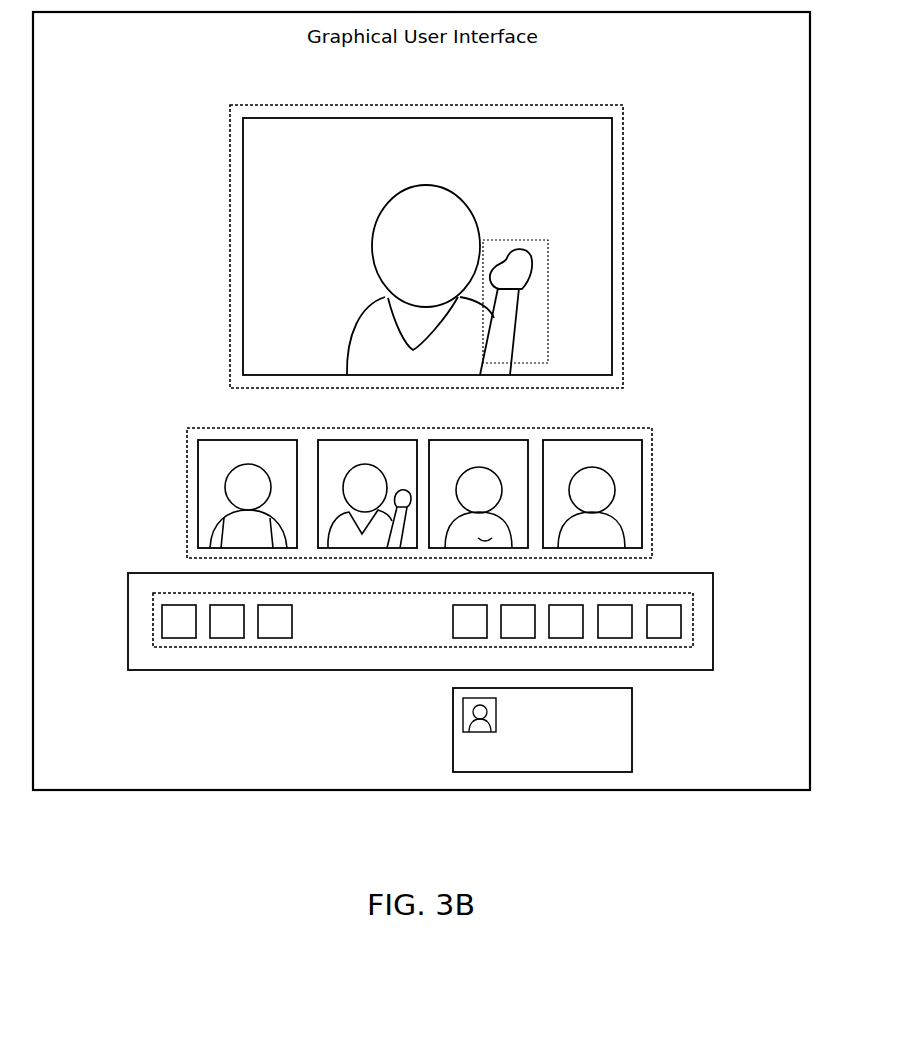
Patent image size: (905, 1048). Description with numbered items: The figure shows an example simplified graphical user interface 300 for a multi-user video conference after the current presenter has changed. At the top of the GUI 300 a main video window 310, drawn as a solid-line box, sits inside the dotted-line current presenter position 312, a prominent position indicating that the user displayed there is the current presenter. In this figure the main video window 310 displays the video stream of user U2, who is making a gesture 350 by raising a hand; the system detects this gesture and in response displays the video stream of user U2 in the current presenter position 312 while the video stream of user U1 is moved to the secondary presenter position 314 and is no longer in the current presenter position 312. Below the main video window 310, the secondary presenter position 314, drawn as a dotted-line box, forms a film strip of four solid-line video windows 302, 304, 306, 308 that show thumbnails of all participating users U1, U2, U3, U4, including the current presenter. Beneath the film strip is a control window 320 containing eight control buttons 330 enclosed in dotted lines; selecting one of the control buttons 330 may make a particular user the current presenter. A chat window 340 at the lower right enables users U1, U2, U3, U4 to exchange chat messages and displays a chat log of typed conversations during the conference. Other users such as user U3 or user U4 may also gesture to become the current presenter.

The graphical user interface 300 is at (438, 851).
The main video window 310 is at (296, 117).
The current presenter position 312 is at (448, 104).
The secondary presenter position 314 is at (653, 428).
The video window 302 is at (212, 439).
The video window 304 is at (325, 439).
The video window 306 is at (440, 439).
The video window 308 is at (553, 439).
The control window 320 is at (143, 572).
The control buttons 330 is at (153, 648).
The chat window 340 is at (634, 718).
The gesture 350 is at (520, 239).
The user U1 is at (272, 457).
The user U2 is at (462, 201).
The user U3 is at (503, 464).
The user U4 is at (616, 463).